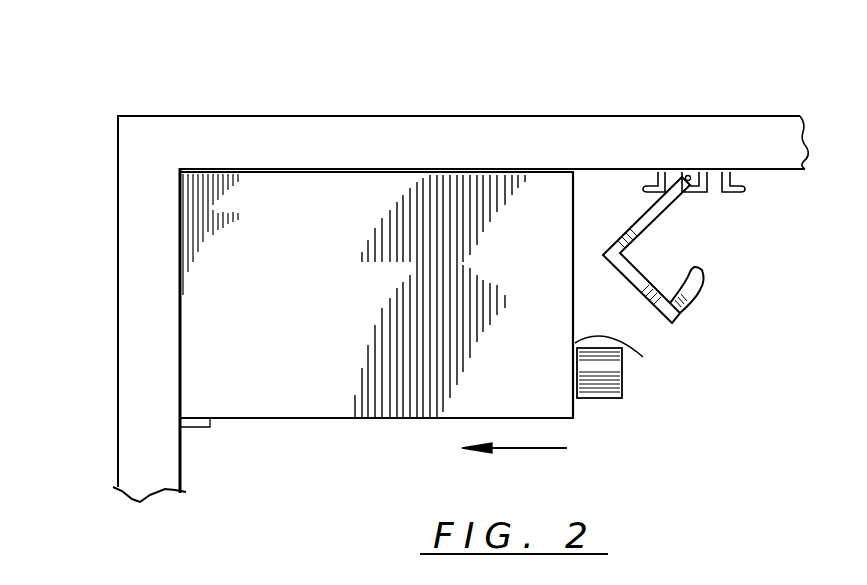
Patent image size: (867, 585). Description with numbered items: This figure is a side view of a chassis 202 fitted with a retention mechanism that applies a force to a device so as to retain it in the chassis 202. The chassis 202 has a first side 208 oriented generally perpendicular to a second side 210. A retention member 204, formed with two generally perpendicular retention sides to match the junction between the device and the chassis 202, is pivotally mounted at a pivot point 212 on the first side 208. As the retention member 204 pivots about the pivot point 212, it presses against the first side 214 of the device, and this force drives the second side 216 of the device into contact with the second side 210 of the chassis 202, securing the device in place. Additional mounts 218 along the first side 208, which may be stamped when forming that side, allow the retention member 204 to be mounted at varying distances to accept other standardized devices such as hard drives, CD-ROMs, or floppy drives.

The chassis 202 is at (282, 95).
The retention member 204 is at (648, 273).
The first side 208 is at (512, 116).
The second side 210 is at (140, 331).
The pivot point 212 is at (690, 177).
The first side of the device 214 is at (697, 353).
The second side of the device 216 is at (181, 363).
The mounts 218 is at (655, 191).